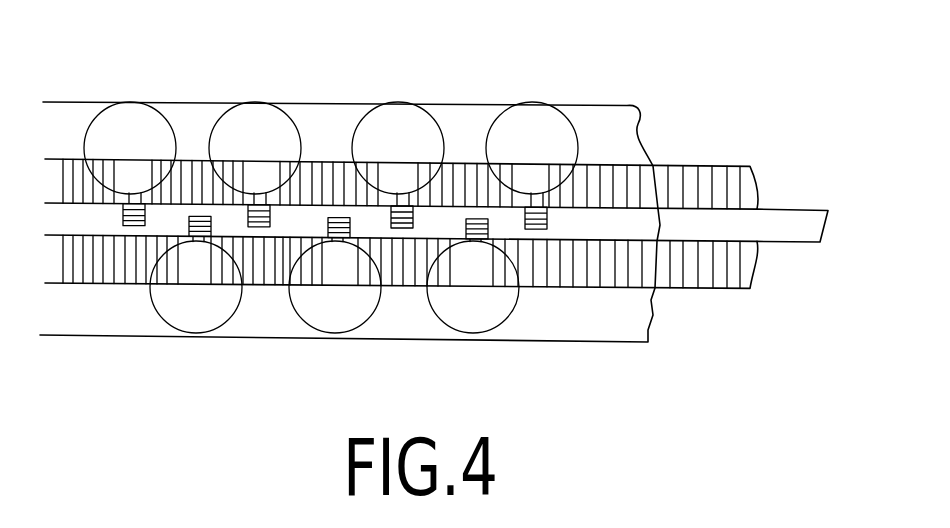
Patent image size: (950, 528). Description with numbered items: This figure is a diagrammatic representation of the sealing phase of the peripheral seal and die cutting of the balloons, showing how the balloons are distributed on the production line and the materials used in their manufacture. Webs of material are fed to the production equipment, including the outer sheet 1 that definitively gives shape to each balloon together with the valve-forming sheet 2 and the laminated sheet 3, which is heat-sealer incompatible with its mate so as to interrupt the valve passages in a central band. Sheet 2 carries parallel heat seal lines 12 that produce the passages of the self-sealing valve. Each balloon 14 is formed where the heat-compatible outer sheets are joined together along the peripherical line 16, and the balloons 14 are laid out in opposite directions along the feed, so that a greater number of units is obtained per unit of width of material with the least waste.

The outer sheet 1 is at (610, 138).
The sheet 2 is at (698, 165).
The laminated sheet 3 is at (785, 210).
The heat seal line 12 is at (725, 290).
The balloon 14 is at (395, 140).
The peripherical line 16 is at (138, 120).